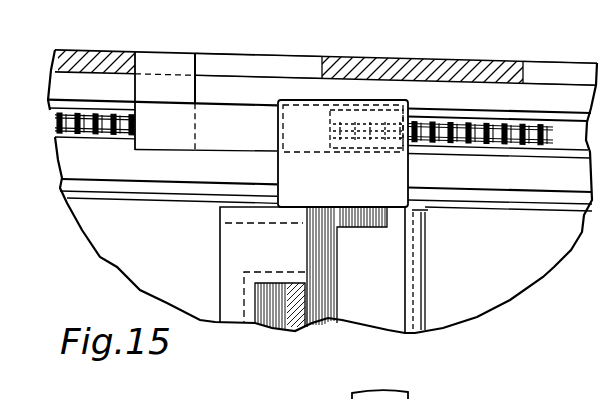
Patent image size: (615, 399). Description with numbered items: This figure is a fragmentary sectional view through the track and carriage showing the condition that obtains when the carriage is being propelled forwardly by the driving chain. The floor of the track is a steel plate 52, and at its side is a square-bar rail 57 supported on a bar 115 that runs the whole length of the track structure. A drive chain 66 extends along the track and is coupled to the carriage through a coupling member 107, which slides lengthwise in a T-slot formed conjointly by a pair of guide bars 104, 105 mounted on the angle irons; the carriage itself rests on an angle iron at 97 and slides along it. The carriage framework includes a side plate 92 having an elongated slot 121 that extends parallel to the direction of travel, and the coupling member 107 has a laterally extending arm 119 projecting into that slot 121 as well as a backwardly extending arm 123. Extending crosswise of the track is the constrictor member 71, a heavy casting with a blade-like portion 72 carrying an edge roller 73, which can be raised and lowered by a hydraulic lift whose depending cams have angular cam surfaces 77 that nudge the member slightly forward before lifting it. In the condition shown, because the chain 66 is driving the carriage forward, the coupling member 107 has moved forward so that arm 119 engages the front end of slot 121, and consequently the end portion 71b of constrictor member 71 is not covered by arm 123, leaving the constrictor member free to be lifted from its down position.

The steel plate 52 is at (123, 250).
The rail 57 is at (555, 207).
The drive chain 66 is at (492, 144).
The constrictor member 71 is at (228, 250).
The end portion of constrictor member 71b is at (358, 100).
The blade-like portion 72 is at (388, 263).
The edge roller 73 is at (426, 307).
The angular cam surface 77 is at (268, 300).
The side plate 92 is at (412, 62).
The resting point of carriage 97 is at (535, 72).
The guide bar 104 is at (562, 96).
The guide bar 105 is at (527, 184).
The coupling member 107 is at (157, 151).
The supporting bar 115 is at (482, 208).
The laterally extending arm 119 is at (165, 53).
The elongated slot 121 is at (262, 62).
The backwardly extending arm 123 is at (218, 117).